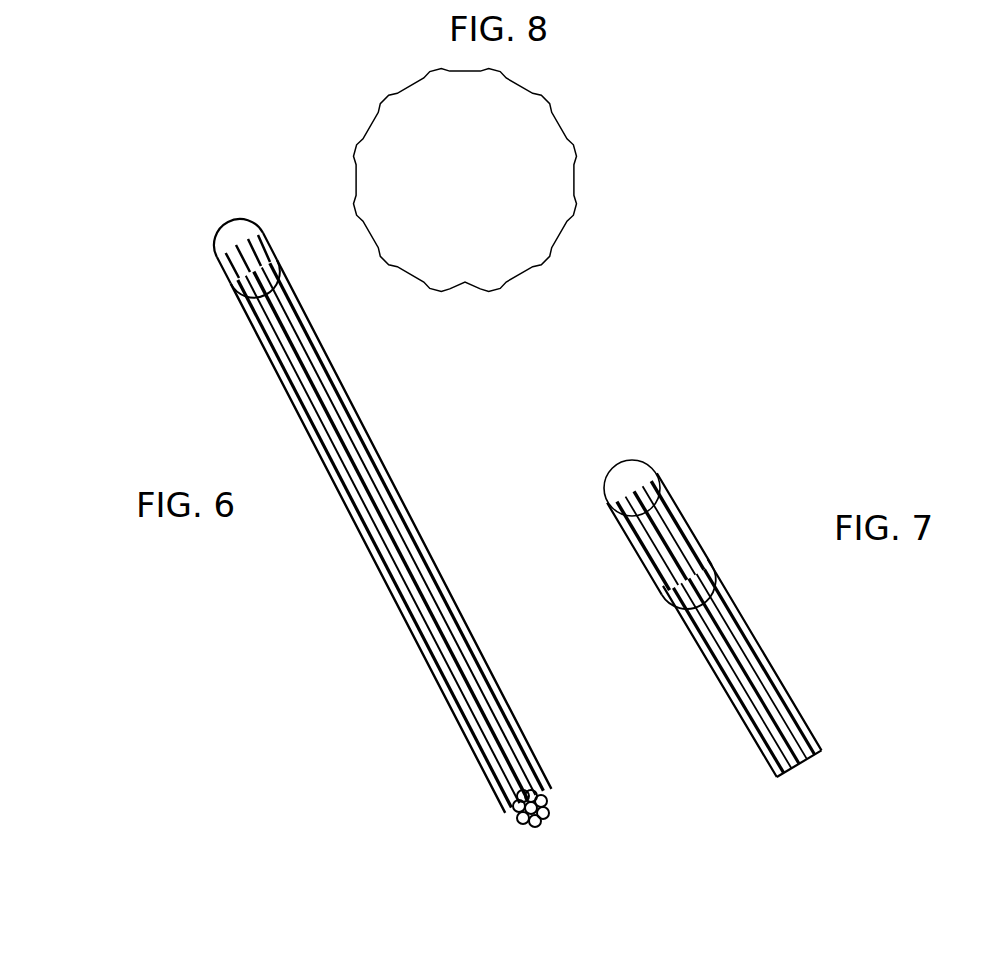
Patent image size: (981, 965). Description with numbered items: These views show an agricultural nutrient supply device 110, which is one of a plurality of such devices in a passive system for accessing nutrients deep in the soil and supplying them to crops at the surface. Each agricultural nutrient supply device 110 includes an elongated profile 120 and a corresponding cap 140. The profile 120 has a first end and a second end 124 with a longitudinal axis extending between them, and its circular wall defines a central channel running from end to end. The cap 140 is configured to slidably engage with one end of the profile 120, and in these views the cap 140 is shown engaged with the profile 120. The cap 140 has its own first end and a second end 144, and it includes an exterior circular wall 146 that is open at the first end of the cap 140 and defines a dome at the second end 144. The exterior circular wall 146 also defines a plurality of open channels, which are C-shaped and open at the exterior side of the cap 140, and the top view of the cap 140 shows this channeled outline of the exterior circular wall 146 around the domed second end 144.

In FIG. 6, the agricultural nutrient supply device 110 is at (162, 404).
In FIG. 6, the profile 120 is at (362, 508).
In FIG. 7, the profile 120 is at (770, 670).
In FIG. 6, the second end 124 is at (553, 797).
In FIG. 6, the cap 140 is at (221, 236).
In FIG. 7, the cap 140 is at (690, 523).
In FIG. 8, the cap 140 is at (608, 150).
In FIG. 7, the second end 144 is at (627, 485).
In FIG. 8, the second end 144 is at (453, 172).
In FIG. 8, the exterior circular wall 146 is at (388, 98).